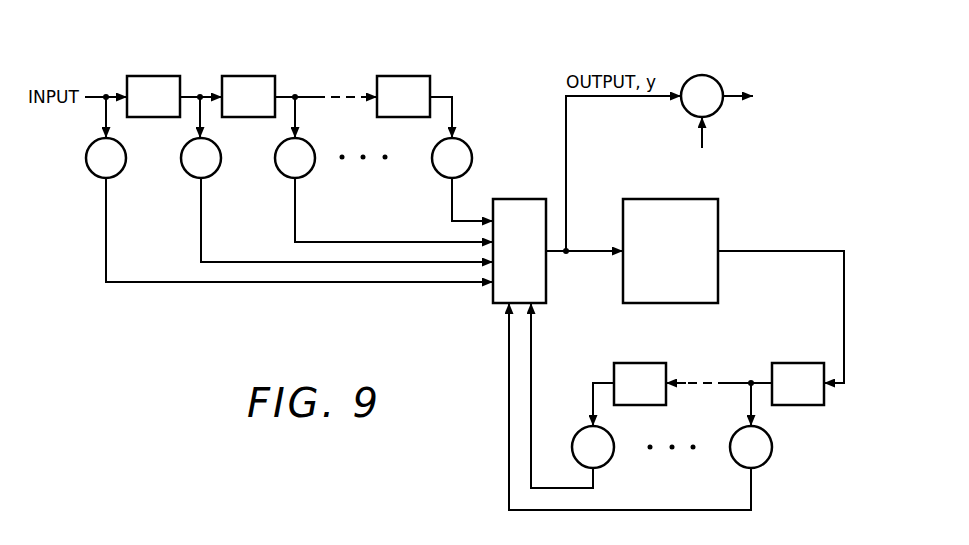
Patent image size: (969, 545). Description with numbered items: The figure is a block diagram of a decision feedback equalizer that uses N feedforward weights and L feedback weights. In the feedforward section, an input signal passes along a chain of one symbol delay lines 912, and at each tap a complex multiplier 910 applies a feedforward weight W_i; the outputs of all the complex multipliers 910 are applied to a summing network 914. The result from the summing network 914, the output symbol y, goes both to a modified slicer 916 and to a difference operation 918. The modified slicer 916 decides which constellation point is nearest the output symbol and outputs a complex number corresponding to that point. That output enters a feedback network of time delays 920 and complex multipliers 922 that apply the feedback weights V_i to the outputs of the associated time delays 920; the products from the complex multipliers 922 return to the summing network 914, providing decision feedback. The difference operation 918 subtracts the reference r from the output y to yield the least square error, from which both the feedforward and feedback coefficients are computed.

The complex multipliers 910 is at (92, 180).
The one symbol delay lines 912 is at (153, 75).
The summing network 914 is at (518, 197).
The modified slicer 916 is at (720, 232).
The difference operation 918 is at (700, 75).
The time delays 920 is at (640, 362).
The complex multipliers 922 is at (577, 432).